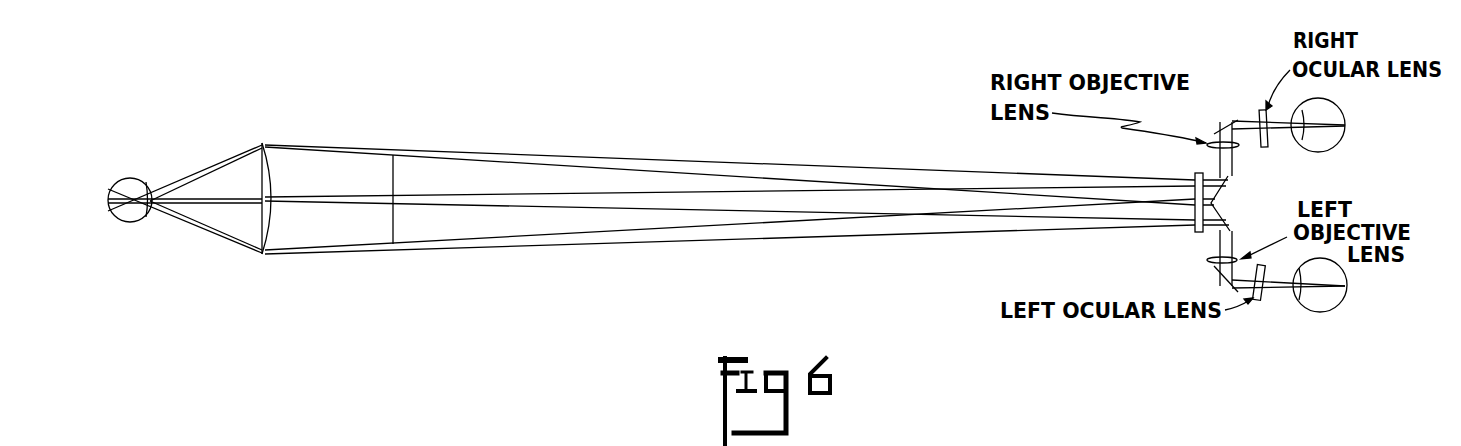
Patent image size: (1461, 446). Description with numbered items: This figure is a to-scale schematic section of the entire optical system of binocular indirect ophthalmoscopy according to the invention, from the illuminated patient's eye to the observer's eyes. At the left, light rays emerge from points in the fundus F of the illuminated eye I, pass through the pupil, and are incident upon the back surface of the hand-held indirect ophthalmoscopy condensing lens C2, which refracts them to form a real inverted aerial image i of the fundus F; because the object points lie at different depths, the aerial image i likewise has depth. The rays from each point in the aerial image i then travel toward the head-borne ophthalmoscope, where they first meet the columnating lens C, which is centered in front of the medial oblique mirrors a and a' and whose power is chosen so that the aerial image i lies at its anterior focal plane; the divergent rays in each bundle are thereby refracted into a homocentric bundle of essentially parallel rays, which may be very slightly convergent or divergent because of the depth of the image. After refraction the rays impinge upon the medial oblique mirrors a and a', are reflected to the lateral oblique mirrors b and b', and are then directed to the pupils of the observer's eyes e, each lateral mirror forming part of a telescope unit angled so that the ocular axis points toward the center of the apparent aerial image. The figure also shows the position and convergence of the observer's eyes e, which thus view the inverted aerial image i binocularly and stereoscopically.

The eye I is at (128, 178).
The fundus F is at (112, 208).
The indirect ophthalmoscopy condensing lens C2 is at (268, 237).
The aerial image i is at (393, 180).
The columnating lens C is at (1193, 202).
The medial oblique mirror a is at (1247, 149).
The medial oblique mirror a' is at (1245, 258).
The lateral oblique mirror b is at (1234, 108).
The lateral oblique mirror b' is at (1211, 270).
The observer's eye e is at (1340, 113).